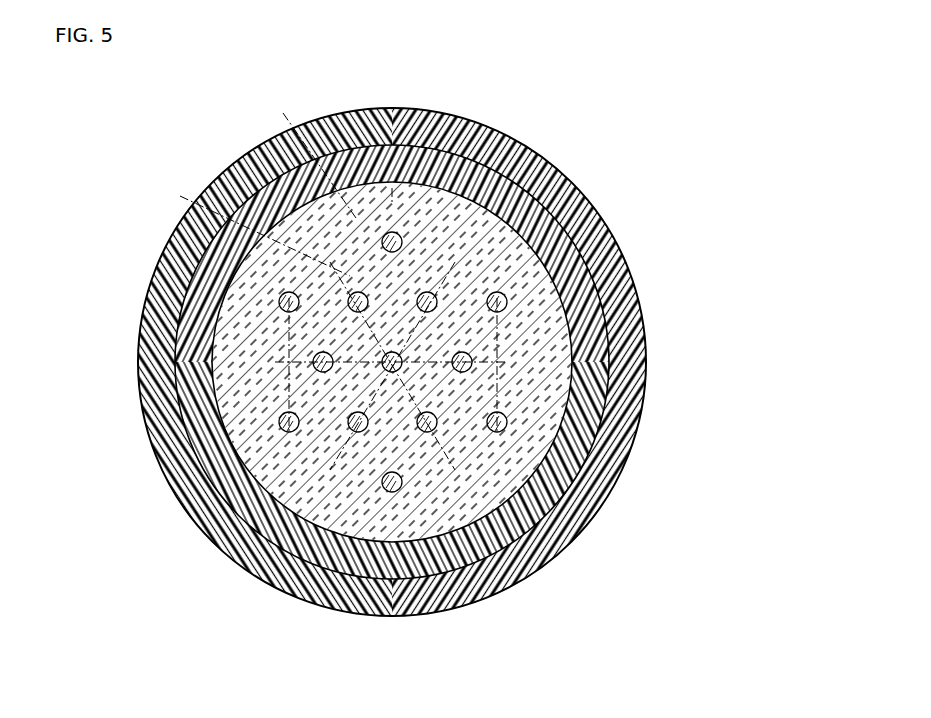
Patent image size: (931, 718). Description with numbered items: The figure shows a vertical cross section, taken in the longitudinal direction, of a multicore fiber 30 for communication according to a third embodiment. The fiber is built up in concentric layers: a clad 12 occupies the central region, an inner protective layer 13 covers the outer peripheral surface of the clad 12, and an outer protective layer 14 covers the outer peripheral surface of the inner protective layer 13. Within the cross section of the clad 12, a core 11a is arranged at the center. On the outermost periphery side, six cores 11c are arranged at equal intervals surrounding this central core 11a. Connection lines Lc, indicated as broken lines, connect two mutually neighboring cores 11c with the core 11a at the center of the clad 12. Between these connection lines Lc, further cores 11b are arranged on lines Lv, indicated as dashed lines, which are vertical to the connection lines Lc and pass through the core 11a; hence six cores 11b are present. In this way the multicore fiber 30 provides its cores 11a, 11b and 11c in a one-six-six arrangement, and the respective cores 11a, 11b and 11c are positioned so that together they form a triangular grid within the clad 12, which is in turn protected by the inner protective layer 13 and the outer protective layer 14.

The multicore fiber 30 is at (668, 103).
The core 11a is at (372, 352).
The cores 11b is at (420, 295).
The cores 11c is at (398, 208).
The clad 12 is at (562, 189).
The inner protective layer 13 is at (598, 410).
The outer protective layer 14 is at (646, 348).
The connection lines Lc is at (310, 156).
The lines Lv is at (255, 226).